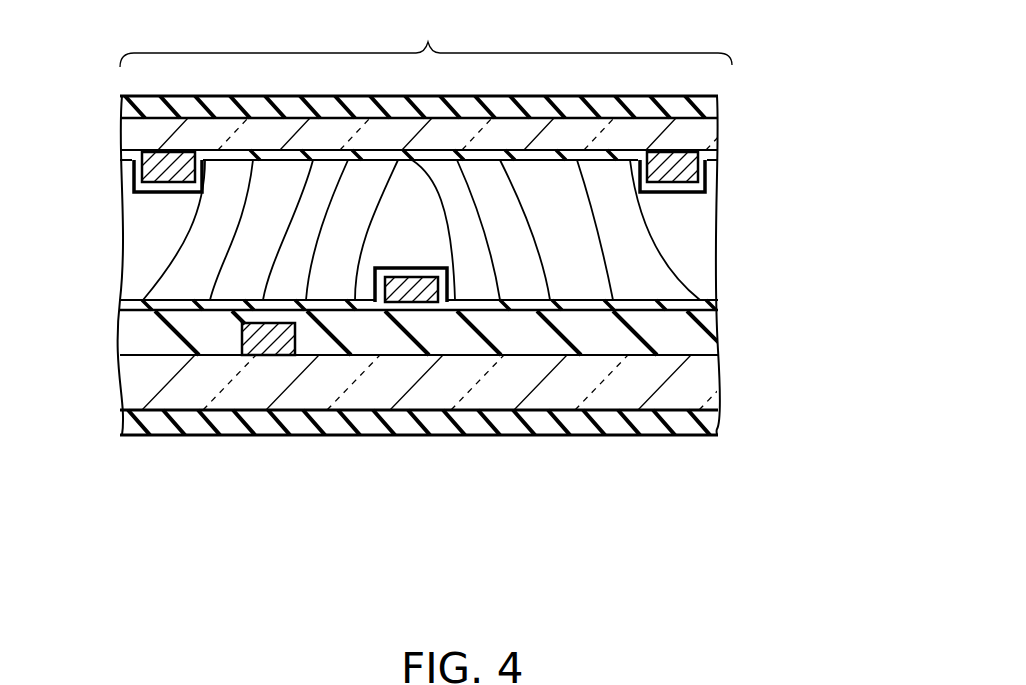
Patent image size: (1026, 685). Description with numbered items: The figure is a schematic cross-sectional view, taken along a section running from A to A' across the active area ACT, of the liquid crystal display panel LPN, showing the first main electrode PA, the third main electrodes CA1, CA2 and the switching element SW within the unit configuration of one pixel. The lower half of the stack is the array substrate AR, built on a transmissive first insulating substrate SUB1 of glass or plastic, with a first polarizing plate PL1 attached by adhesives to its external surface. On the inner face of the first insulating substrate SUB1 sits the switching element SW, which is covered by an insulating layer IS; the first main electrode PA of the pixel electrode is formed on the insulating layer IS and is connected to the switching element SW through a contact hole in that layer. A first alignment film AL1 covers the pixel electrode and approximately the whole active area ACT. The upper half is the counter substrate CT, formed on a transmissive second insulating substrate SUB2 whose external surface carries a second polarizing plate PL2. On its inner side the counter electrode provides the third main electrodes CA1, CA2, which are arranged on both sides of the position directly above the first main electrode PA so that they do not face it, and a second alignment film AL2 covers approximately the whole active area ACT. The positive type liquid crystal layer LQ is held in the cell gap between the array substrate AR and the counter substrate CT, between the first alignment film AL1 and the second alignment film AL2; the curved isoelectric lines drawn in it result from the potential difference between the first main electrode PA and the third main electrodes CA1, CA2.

The liquid crystal display panel LPN is at (757, 79).
The active area ACT is at (426, 40).
The section line start A is at (125, 81).
The section line end A' is at (715, 81).
The counter substrate CT is at (116, 139).
The second polarizing plate PL2 is at (704, 107).
The second insulating substrate SUB2 is at (704, 137).
The second alignment film AL2 is at (713, 156).
The third main electrode CA1 is at (143, 176).
The third main electrode CA2 is at (690, 172).
The liquid crystal layer LQ is at (476, 230).
The array substrate AR is at (121, 387).
The first alignment film AL1 is at (703, 303).
The first main electrode PA is at (407, 290).
The insulating layer IS is at (703, 342).
The switching element SW is at (263, 350).
The first insulating substrate SUB1 is at (704, 375).
The first polarizing plate PL1 is at (704, 423).